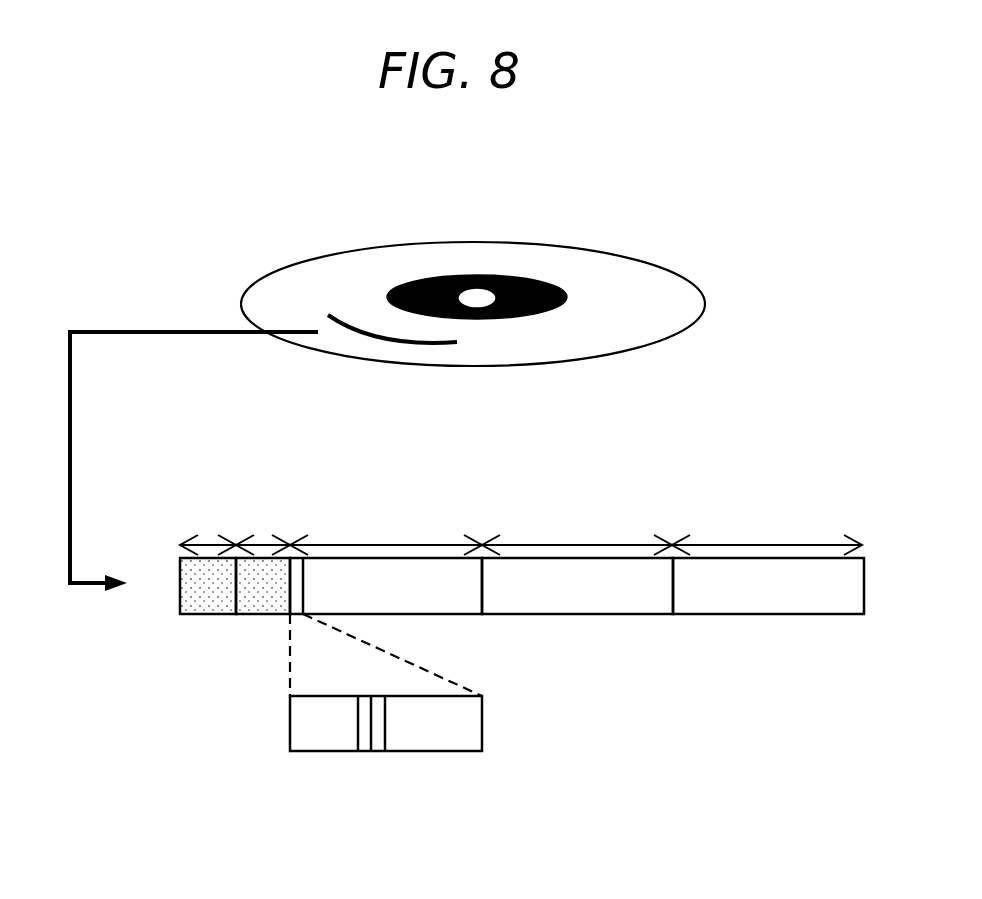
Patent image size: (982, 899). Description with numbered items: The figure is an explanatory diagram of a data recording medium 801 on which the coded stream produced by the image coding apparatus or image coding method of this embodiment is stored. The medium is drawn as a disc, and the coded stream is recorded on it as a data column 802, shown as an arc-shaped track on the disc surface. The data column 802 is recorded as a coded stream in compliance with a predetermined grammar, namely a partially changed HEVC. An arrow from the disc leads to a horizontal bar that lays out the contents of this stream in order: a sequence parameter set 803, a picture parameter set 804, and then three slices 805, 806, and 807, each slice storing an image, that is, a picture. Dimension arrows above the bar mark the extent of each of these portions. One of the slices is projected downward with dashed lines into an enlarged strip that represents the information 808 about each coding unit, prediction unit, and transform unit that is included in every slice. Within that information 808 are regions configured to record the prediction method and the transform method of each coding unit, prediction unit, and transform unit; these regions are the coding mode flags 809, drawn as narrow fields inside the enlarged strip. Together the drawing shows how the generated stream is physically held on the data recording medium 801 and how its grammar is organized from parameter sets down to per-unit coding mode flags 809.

The data recording medium 801 is at (330, 252).
The data column 802 is at (327, 313).
The sequence parameter set 803 is at (202, 542).
The picture parameter set 804 is at (263, 542).
The slice 805 is at (386, 542).
The slice 806 is at (577, 542).
The slice 807 is at (768, 542).
The information about each of CU, PU, and TU 808 is at (290, 723).
The coding mode flags 809 is at (378, 751).